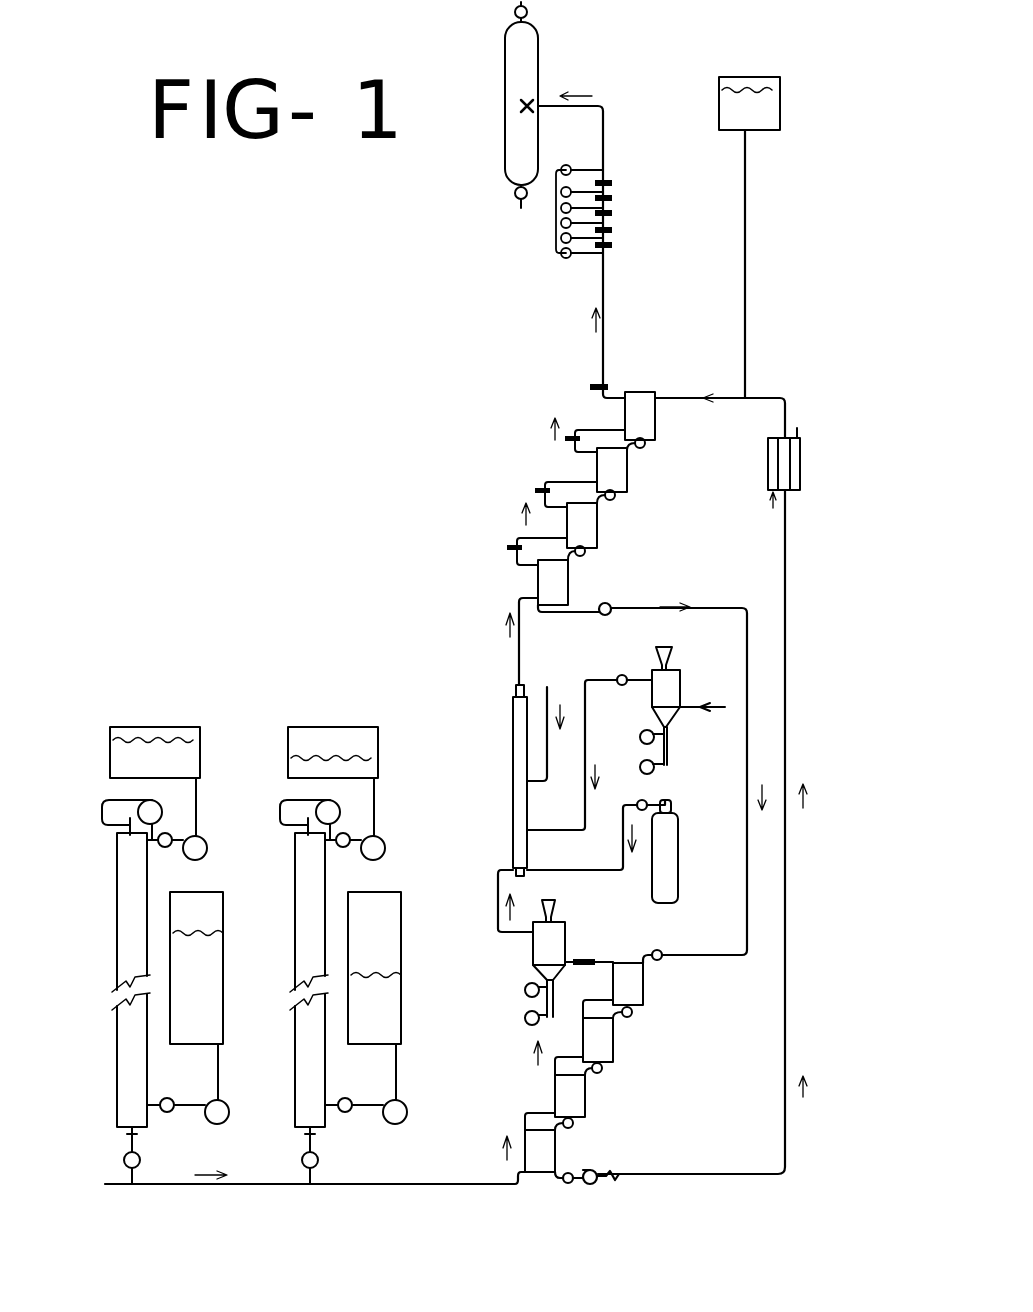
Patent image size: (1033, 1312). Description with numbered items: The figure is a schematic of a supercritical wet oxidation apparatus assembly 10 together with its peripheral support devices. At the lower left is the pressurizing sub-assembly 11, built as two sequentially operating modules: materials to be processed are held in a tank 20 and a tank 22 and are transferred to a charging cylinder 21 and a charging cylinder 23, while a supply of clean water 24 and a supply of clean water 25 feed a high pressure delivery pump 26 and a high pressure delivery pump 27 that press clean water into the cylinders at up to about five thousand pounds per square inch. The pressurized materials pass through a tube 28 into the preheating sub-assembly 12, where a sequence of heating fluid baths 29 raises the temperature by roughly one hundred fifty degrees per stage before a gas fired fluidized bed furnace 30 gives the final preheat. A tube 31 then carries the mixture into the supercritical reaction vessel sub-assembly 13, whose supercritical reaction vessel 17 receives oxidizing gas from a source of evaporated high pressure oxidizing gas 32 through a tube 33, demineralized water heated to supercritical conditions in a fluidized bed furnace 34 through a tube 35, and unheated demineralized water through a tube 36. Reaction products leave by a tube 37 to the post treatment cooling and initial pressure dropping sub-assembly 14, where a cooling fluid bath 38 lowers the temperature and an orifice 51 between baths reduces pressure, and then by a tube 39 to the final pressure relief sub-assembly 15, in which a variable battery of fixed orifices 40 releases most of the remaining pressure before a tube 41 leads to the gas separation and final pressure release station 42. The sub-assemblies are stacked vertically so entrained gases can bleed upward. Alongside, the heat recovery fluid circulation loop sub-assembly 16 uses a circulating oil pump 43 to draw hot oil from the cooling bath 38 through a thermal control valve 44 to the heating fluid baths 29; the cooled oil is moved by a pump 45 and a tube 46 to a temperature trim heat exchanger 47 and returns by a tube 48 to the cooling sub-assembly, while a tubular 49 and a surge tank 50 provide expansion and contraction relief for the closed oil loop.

The supercritical wet oxidation apparatus assembly 10 is at (318, 403).
The pressurizing sub-assembly 11 is at (252, 648).
The preheating sub-assembly 12 is at (640, 1105).
The supercritical reaction vessel sub-assembly 13 is at (461, 742).
The post treatment cooling and initial pressure dropping sub-assembly 14 is at (460, 485).
The final pressure relief sub-assembly 15 is at (490, 262).
The heat recovery fluid circulation loop sub-assembly 16 is at (722, 576).
The supercritical reaction vessel 17 is at (518, 745).
The tank 20 is at (404, 958).
The charging cylinder 21 is at (293, 962).
The tank 22 is at (223, 958).
The charging cylinder 23 is at (115, 968).
The supply of clean water 24 is at (355, 703).
The supply of clean water 25 is at (190, 727).
The high pressure delivery pump 26 is at (385, 848).
The high pressure delivery pump 27 is at (207, 852).
The tube 28 is at (470, 1183).
The heating fluid baths 29 is at (522, 1135).
The gas fired fluidized bed furnace 30 is at (528, 948).
The tube 31 is at (512, 866).
The source of evaporated high pressure oxidizing gas 32 is at (680, 865).
The tube 33 is at (570, 872).
The fluidized bed furnace 34 is at (672, 718).
The tube 35 is at (587, 752).
The tube 36 is at (572, 677).
The tube 37 is at (519, 665).
The cooling fluid bath 38 is at (568, 580).
The tube 39 is at (598, 296).
The variable battery of fixed orifices 40 is at (650, 232).
The tube 41 is at (603, 133).
The gas separation and final pressure release station 42 is at (502, 128).
The circulating oil pump 43 is at (603, 612).
The thermal control valve 44 is at (660, 962).
The pump 45 is at (587, 1162).
The tube 46 is at (788, 1028).
The temperature trim heat exchanger 47 is at (800, 437).
The tube 48 is at (705, 397).
The tubular 49 is at (747, 220).
The surge tank 50 is at (780, 122).
The orifice 51 is at (563, 483).